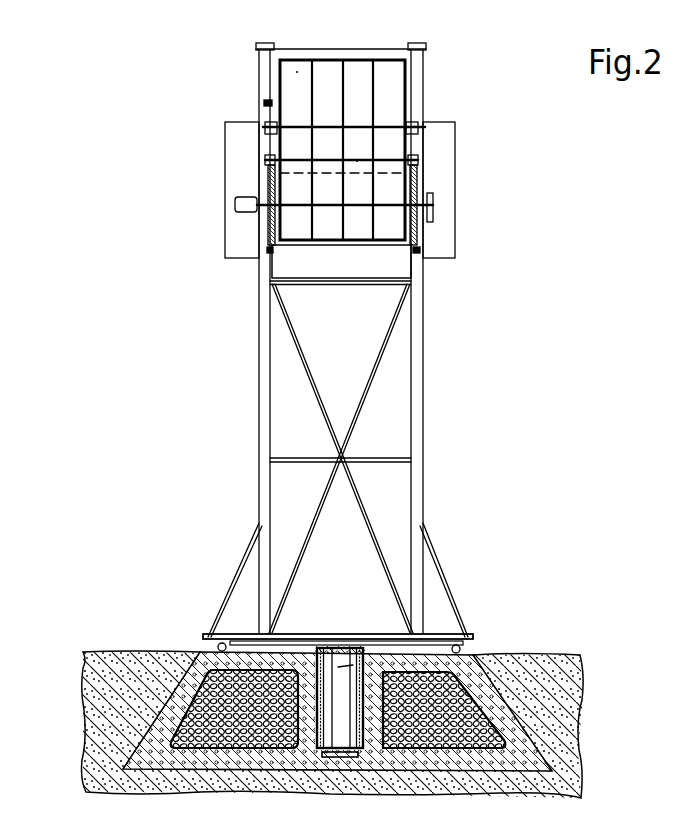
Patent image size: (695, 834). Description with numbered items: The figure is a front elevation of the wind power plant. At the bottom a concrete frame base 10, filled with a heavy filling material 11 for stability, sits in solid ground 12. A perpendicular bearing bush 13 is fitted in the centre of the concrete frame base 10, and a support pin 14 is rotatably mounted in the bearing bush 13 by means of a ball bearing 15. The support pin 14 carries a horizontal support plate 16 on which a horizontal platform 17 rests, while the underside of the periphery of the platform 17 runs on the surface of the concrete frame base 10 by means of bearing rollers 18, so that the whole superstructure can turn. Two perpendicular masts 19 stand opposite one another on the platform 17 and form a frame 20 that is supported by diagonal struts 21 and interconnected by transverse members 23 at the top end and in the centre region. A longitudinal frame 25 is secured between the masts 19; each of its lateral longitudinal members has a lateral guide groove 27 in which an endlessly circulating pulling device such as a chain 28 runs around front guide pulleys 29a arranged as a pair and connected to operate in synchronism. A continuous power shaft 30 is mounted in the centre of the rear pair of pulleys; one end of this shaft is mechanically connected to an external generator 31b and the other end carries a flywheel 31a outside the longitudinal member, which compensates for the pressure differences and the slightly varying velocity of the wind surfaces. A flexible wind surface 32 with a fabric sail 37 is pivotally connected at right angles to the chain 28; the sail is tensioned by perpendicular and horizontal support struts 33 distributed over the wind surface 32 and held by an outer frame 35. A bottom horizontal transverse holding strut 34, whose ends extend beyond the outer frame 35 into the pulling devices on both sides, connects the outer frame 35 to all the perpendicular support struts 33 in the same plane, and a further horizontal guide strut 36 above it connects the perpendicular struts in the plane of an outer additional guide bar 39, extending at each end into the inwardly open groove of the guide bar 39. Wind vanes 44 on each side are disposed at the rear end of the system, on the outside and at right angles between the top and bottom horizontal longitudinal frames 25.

The concrete frame base 10 is at (160, 731).
The heavy filling material 11 is at (503, 692).
The solid ground 12 is at (563, 736).
The bearing bush 13 is at (263, 653).
The support pin 14 is at (387, 642).
The ball bearing 15 is at (322, 647).
The support plate 16 is at (402, 647).
The platform 17 is at (368, 637).
The bearing rollers 18 is at (217, 647).
The perpendicular masts 19 is at (265, 372).
The frame 20 is at (247, 304).
The diagonal struts 21 is at (320, 403).
The transverse members 23 is at (385, 285).
The longitudinal frame 25 is at (437, 146).
The lateral guide groove 27 is at (265, 160).
The chain 28 is at (415, 173).
The front guide pulleys 29a is at (270, 230).
The power shaft 30 is at (300, 207).
The flywheel 31a is at (433, 210).
The external generator 31b is at (235, 203).
The wind surface 32 is at (396, 108).
The support struts 33 is at (310, 93).
The transverse holding strut 34 is at (357, 162).
The outer frame 35 is at (263, 103).
The guide strut 36 is at (330, 127).
The fabric sail 37 is at (297, 72).
The guide bar 39 is at (265, 128).
The wind vanes 44 is at (237, 248).